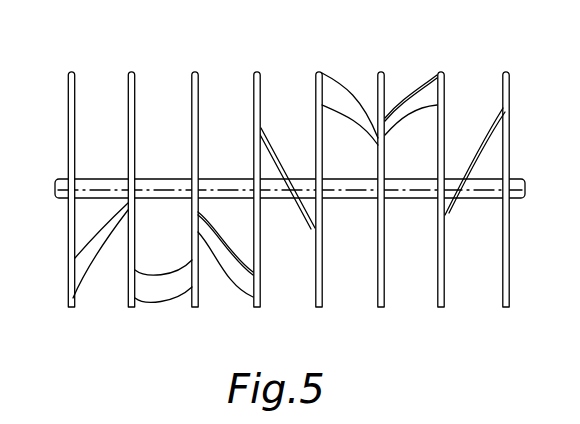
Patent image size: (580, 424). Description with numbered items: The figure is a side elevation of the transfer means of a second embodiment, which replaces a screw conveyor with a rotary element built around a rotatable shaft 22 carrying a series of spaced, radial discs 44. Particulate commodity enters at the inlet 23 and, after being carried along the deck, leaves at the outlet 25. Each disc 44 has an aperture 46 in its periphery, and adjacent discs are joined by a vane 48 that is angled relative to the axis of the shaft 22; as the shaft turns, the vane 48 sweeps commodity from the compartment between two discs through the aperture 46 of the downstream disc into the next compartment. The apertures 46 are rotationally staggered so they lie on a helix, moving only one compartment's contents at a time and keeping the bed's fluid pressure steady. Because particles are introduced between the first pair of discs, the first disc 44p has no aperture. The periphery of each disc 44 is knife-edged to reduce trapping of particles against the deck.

The rotatable shaft 22 is at (62, 183).
The inlet 23 is at (283, 183).
The outlet 25 is at (546, 265).
The radial disc 44 is at (199, 82).
The first disc 44p is at (70, 258).
The aperture 46 is at (192, 302).
The vane 48 is at (95, 262).